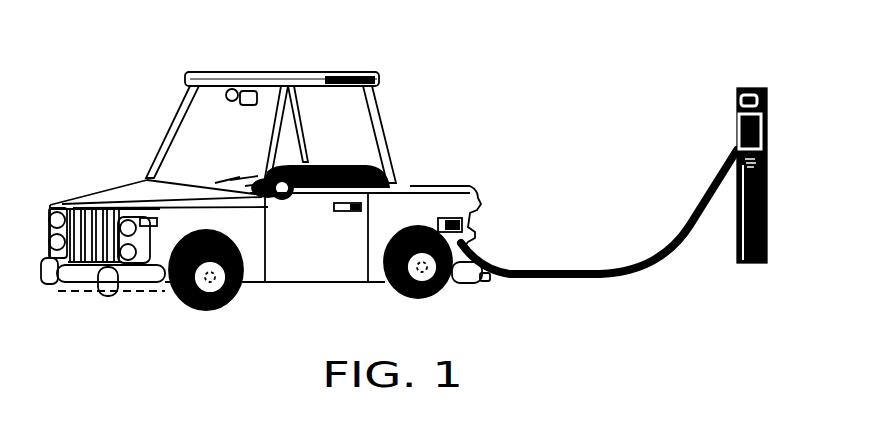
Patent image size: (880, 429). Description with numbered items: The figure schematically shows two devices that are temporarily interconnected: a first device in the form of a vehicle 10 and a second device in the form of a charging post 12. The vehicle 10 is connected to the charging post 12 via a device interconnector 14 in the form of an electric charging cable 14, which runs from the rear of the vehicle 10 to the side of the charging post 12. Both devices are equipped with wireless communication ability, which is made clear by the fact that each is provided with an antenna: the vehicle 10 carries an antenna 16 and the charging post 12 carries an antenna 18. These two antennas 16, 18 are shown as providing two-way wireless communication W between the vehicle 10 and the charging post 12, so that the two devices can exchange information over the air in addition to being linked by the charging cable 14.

The vehicle 10 is at (133, 123).
The charging post 12 is at (723, 142).
The device interconnector 14 is at (648, 263).
The antenna 16 is at (472, 169).
The antenna 18 is at (752, 78).
The two-way wireless communication W is at (588, 50).